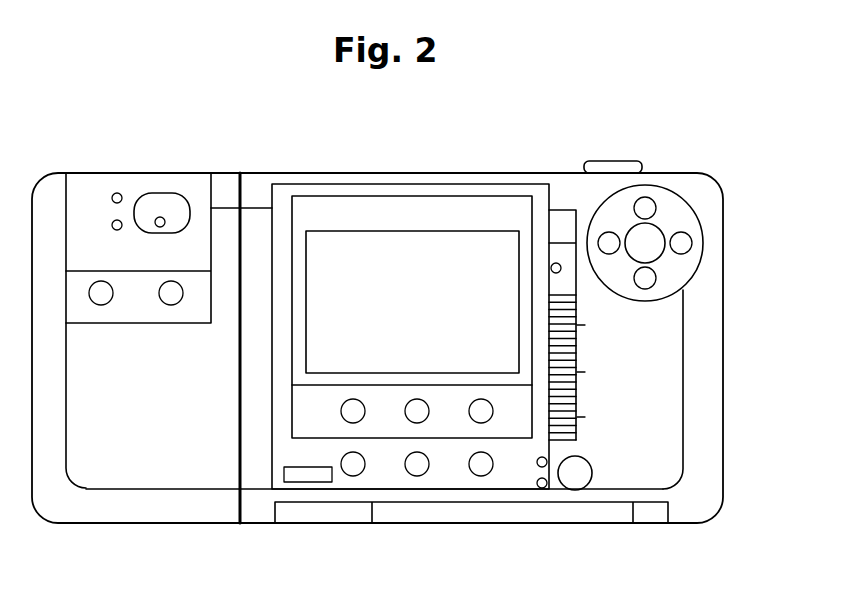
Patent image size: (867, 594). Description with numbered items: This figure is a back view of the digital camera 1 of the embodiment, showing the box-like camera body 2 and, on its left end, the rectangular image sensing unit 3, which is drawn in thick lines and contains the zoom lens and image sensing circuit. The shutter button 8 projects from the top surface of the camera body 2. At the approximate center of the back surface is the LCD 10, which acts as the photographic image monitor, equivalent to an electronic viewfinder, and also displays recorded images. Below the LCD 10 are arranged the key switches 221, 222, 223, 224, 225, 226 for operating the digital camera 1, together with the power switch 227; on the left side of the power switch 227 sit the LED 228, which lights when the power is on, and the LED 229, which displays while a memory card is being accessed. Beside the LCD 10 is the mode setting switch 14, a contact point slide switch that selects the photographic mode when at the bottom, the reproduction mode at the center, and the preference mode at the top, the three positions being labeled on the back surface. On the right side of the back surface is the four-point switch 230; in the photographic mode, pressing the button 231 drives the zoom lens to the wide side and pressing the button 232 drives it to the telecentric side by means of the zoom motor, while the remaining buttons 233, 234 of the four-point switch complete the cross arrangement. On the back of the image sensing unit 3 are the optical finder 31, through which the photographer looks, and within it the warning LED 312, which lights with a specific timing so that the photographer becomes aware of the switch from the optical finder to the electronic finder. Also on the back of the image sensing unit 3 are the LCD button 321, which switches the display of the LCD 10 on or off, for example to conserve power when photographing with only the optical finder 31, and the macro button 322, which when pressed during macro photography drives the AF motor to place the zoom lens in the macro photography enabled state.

The digital camera 1 is at (299, 117).
The camera body 2 is at (403, 162).
The image sensing unit 3 is at (110, 142).
The shutter button 8 is at (607, 163).
The LCD 10 is at (462, 237).
The mode setting switch 14 is at (577, 400).
The optical finder 31 is at (155, 203).
The warning LED 312 is at (163, 217).
The LCD button 321 is at (171, 297).
The macro button 322 is at (101, 297).
The key switch 221 is at (353, 405).
The key switch 222 is at (417, 405).
The key switch 223 is at (481, 405).
The key switch 224 is at (353, 470).
The key switch 225 is at (417, 476).
The key switch 226 is at (481, 476).
The power switch 227 is at (578, 474).
The LED 228 is at (538, 466).
The LED 229 is at (544, 488).
The 4-point switch 230 is at (700, 194).
The button 231 is at (605, 238).
The button 232 is at (684, 245).
The up key 233 is at (647, 203).
The down key 234 is at (648, 277).